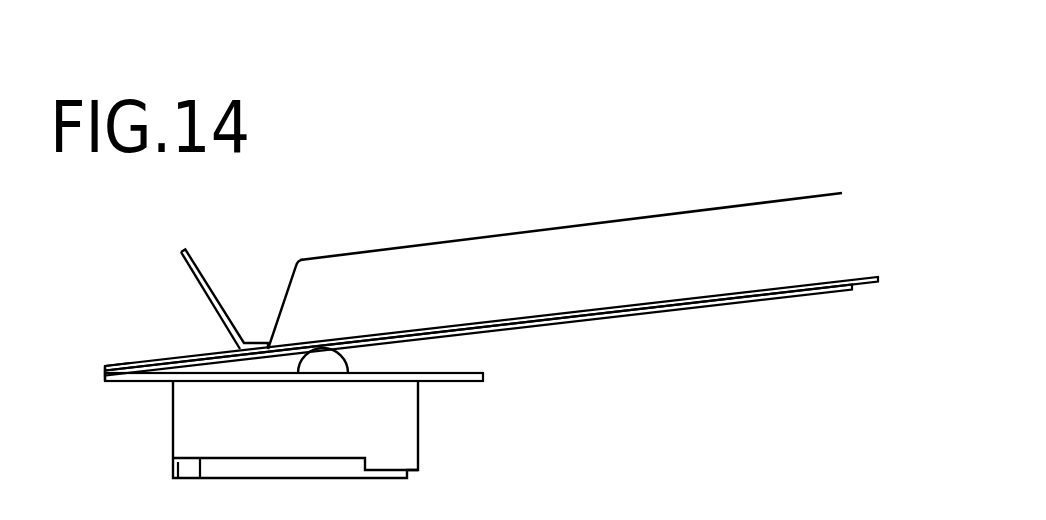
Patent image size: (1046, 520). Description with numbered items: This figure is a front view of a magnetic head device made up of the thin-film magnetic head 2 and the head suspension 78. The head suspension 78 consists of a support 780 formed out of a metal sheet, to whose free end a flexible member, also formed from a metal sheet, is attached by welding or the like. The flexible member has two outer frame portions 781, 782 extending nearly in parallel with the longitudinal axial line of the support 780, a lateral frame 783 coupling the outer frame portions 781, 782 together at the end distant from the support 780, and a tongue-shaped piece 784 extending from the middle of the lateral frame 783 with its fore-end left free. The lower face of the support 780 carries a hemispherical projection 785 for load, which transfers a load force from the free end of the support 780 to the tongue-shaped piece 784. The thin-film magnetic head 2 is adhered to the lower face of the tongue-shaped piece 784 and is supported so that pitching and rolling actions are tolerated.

The thin-film magnetic head 2 is at (148, 456).
The head suspension 78 is at (511, 250).
The support 780 is at (627, 237).
The outer frame portion 781 is at (170, 362).
The outer frame portion 782 is at (170, 362).
The lateral frame 783 is at (126, 368).
The tongue-shaped piece 784 is at (445, 372).
The projection for load 785 is at (323, 362).